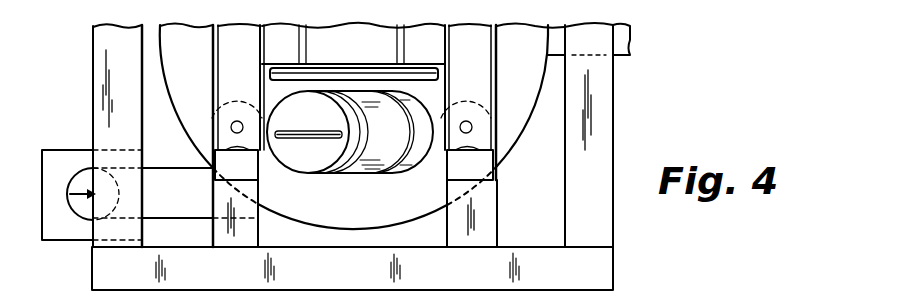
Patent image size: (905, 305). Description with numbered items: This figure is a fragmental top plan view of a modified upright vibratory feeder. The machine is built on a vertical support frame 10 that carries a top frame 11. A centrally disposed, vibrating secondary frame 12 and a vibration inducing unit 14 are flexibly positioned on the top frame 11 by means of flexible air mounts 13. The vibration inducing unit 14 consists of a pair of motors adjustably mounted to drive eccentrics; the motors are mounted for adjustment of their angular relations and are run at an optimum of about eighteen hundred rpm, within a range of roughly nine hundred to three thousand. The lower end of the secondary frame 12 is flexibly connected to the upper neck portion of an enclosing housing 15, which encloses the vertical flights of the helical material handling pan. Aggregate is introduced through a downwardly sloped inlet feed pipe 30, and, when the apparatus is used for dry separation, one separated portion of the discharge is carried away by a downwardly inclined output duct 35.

The vertical support frame 10 is at (613, 266).
The top frame 11 is at (497, 215).
The secondary frame 12 is at (357, 64).
The flexible air mounts 13 is at (237, 100).
The vibration inducing unit 14 is at (347, 176).
The enclosing housing 15 is at (182, 128).
The inlet feed pipe 30 is at (72, 210).
The output duct 35 is at (630, 55).